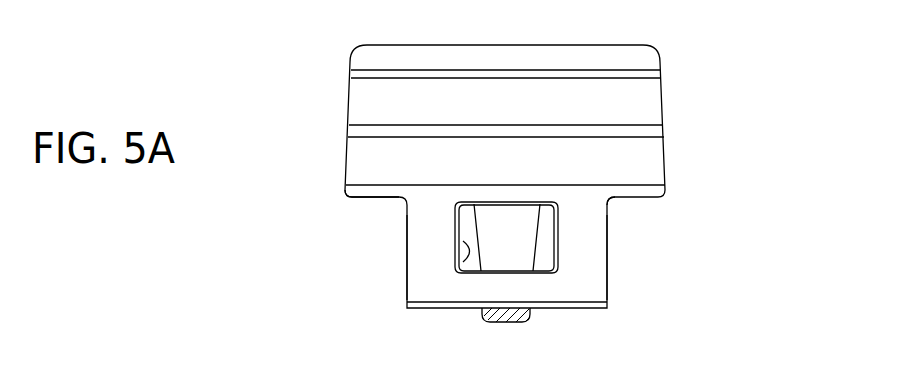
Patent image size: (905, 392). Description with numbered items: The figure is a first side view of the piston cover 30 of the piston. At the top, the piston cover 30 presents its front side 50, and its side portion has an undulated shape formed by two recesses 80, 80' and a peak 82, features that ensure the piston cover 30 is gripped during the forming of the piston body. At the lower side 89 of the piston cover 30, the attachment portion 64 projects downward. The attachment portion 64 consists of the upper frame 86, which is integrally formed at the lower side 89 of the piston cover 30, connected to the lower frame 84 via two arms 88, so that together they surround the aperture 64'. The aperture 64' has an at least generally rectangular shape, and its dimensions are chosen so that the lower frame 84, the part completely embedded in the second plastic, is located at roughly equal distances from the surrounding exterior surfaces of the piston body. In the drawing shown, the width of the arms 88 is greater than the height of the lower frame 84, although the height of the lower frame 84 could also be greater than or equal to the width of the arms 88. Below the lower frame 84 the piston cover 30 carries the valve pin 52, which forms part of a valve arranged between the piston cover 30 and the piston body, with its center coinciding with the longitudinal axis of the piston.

The front side 50 is at (378, 55).
The recess 80 is at (554, 49).
The recess 80' is at (556, 125).
The peak 82 is at (667, 100).
The piston cover 30 is at (735, 151).
The attachment portion 64 is at (557, 269).
The aperture 64' is at (420, 268).
The lower frame 84 is at (546, 288).
The upper frame 86 is at (548, 193).
The arms 88 is at (417, 238).
The lower side 89 is at (352, 204).
The valve pin 52 is at (493, 323).